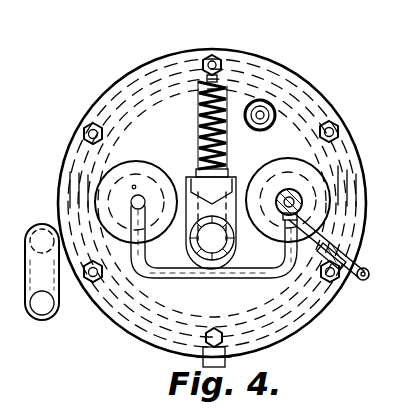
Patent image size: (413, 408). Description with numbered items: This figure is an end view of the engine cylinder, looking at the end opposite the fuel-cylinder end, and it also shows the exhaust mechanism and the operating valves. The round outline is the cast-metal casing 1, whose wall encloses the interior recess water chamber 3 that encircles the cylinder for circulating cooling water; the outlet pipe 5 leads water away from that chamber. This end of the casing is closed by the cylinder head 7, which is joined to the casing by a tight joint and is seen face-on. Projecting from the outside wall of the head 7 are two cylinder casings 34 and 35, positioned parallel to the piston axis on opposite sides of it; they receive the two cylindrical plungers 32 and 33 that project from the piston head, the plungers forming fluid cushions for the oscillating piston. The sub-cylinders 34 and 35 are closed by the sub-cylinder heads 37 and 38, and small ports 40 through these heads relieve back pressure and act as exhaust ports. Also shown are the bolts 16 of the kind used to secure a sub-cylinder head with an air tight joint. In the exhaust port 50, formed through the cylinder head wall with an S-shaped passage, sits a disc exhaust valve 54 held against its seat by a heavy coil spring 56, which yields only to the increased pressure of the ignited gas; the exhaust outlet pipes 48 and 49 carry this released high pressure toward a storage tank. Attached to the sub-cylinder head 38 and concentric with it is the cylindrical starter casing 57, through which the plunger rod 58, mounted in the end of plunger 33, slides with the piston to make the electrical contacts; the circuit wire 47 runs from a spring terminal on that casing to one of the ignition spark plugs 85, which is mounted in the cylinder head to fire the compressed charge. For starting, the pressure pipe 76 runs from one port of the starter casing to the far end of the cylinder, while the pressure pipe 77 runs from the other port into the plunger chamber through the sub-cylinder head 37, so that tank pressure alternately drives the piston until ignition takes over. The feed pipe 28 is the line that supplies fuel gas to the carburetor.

The casing 1 is at (337, 132).
The recess water chamber 3 is at (320, 80).
The outlet pipe 5 is at (232, 358).
The cylinder head 7 is at (350, 145).
The bolts 16 is at (228, 305).
The feed pipe 28 is at (304, 117).
The cylindrical plunger 32 is at (140, 199).
The cylindrical plunger 33 is at (272, 186).
The projecting cylinder casing 34 is at (102, 185).
The projecting cylinder casing 35 is at (332, 190).
The sub-cylinder head 37 is at (98, 203).
The sub-cylinder head 38 is at (334, 199).
The small ports 40 is at (132, 186).
The circuit wire 47 is at (275, 100).
The exhaust outlet pipe 48 is at (236, 242).
The exhaust outlet pipe 49 is at (53, 228).
The exhaust port 50 is at (274, 190).
The disc exhaust valve 54 is at (210, 244).
The coil spring 56 is at (225, 84).
The starter casing 57 is at (300, 192).
The plunger rod 58 is at (302, 200).
The pressure pipe 76 is at (371, 272).
The pressure pipe 77 is at (230, 279).
The ignition spark plug 85 is at (261, 100).